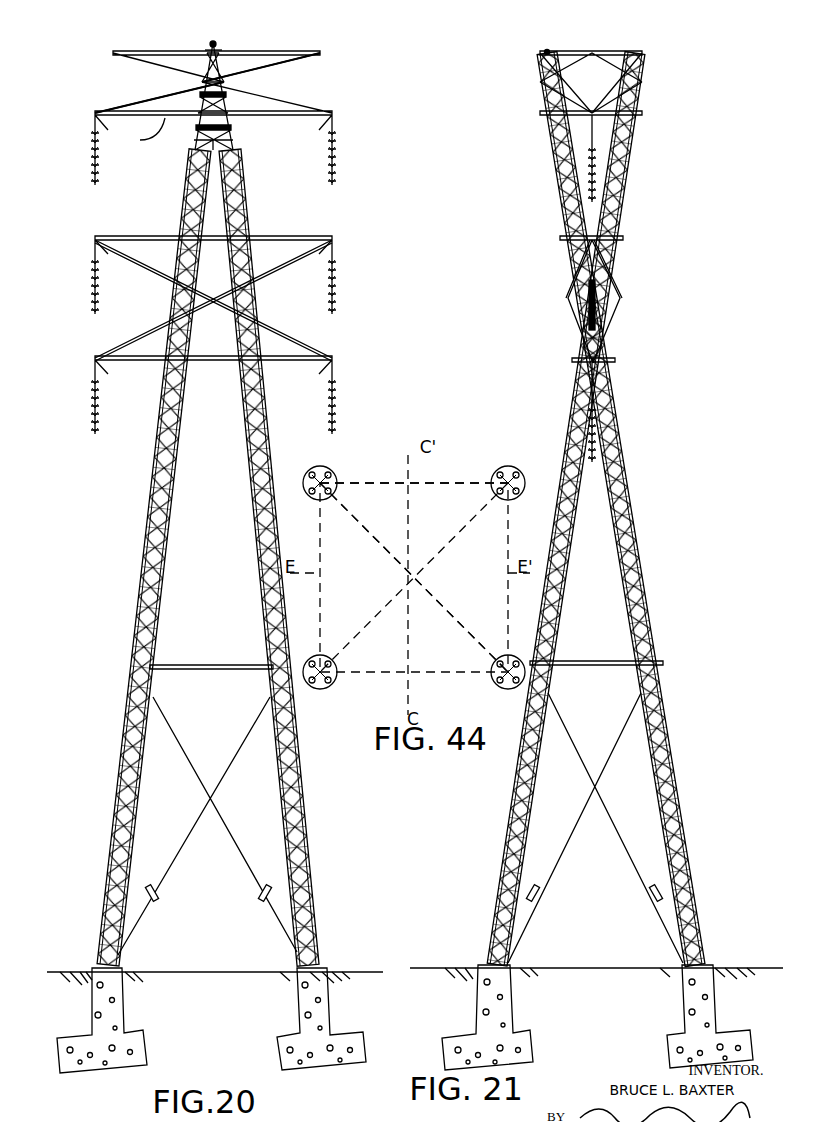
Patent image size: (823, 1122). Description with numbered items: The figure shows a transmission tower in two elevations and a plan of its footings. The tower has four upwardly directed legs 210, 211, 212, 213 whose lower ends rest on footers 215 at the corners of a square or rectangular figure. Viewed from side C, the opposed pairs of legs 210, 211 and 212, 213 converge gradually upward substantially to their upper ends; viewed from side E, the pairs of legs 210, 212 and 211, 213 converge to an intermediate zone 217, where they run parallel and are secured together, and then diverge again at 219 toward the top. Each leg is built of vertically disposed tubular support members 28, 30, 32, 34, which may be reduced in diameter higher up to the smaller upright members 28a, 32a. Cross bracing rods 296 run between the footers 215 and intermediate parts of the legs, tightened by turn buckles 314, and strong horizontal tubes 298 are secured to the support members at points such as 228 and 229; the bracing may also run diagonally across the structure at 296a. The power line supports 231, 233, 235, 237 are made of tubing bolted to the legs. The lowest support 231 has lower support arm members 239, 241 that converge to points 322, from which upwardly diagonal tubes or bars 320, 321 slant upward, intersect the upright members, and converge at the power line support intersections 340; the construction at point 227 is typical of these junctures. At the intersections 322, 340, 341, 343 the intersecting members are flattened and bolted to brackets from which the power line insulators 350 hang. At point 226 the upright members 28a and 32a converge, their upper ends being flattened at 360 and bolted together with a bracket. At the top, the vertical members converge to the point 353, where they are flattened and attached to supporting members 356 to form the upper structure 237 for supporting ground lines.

In FIG. 20, the leg 210 is at (150, 577).
In FIG. 21, the leg 210 is at (675, 738).
In FIG. 44, the leg 210 is at (325, 655).
In FIG. 20, the leg 211 is at (298, 761).
In FIG. 44, the leg 211 is at (500, 655).
In FIG. 21, the leg 212 is at (517, 756).
In FIG. 44, the leg 212 is at (323, 486).
In FIG. 44, the leg 213 is at (500, 486).
In FIG. 20, the footer 215 is at (124, 1018).
In FIG. 21, the footer 215 is at (508, 1010).
In FIG. 44, the footer 215 is at (330, 474).
In FIG. 21, the zone 217 is at (632, 334).
In FIG. 21, the diverging portion 219 is at (648, 163).
In FIG. 20, the point 226 is at (222, 141).
In FIG. 20, the point 227 is at (350, 358).
In FIG. 20, the point 228 is at (294, 676).
In FIG. 20, the point 229 is at (124, 667).
In FIG. 20, the transmission line support 231 is at (278, 366).
In FIG. 20, the transmission line support 233 is at (258, 250).
In FIG. 20, the transmission line support 235 is at (275, 110).
In FIG. 20, the transmission line support 237 is at (262, 62).
In FIG. 20, the lower support arm member 239 is at (220, 364).
In FIG. 21, the lower support arm member 239 is at (615, 360).
In FIG. 21, the lower support arm member 241 is at (572, 360).
In FIG. 20, the vertically disposed support member 28 is at (120, 846).
In FIG. 44, the vertically disposed support member 28 is at (329, 496).
In FIG. 20, the upright member 28a is at (238, 179).
In FIG. 21, the vertically disposed support member 30 is at (658, 800).
In FIG. 44, the vertically disposed support member 30 is at (312, 474).
In FIG. 20, the vertically disposed support member 32 is at (115, 838).
In FIG. 21, the vertically disposed support member 32 is at (536, 800).
In FIG. 44, the vertically disposed support member 32 is at (311, 496).
In FIG. 20, the upright member 32a is at (192, 177).
In FIG. 44, the vertically disposed support member 34 is at (324, 474).
In FIG. 20, the cross bracing rod 296 is at (160, 883).
In FIG. 44, the cross bracing rod 296 is at (396, 486).
In FIG. 44, the diagonal cross bracing 296a is at (390, 556).
In FIG. 20, the horizontal tube 298 is at (208, 664).
In FIG. 21, the horizontal tube 298 is at (584, 661).
In FIG. 20, the turn buckle 314 is at (155, 900).
In FIG. 20, the upwardly diagonal tube or bar 320 is at (258, 330).
In FIG. 21, the upwardly diagonal tube or bar 320 is at (621, 296).
In FIG. 21, the upwardly diagonal tube or bar 321 is at (568, 297).
In FIG. 20, the converging point 322 is at (95, 358).
In FIG. 20, the power line support intersection 340 is at (97, 237).
In FIG. 21, the power line support intersection 340 is at (623, 237).
In FIG. 20, the intersection 341 is at (105, 112).
In FIG. 21, the intersection 341 is at (592, 112).
In FIG. 20, the intersection 343 is at (113, 53).
In FIG. 21, the intersection 343 is at (594, 52).
In FIG. 20, the power line insulator 350 is at (338, 181).
In FIG. 21, the power line insulator 350 is at (586, 176).
In FIG. 20, the point 353 is at (208, 40).
In FIG. 21, the point 353 is at (550, 52).
In FIG. 20, the supporting member 356 is at (238, 52).
In FIG. 20, the flattened upper end 360 is at (137, 139).